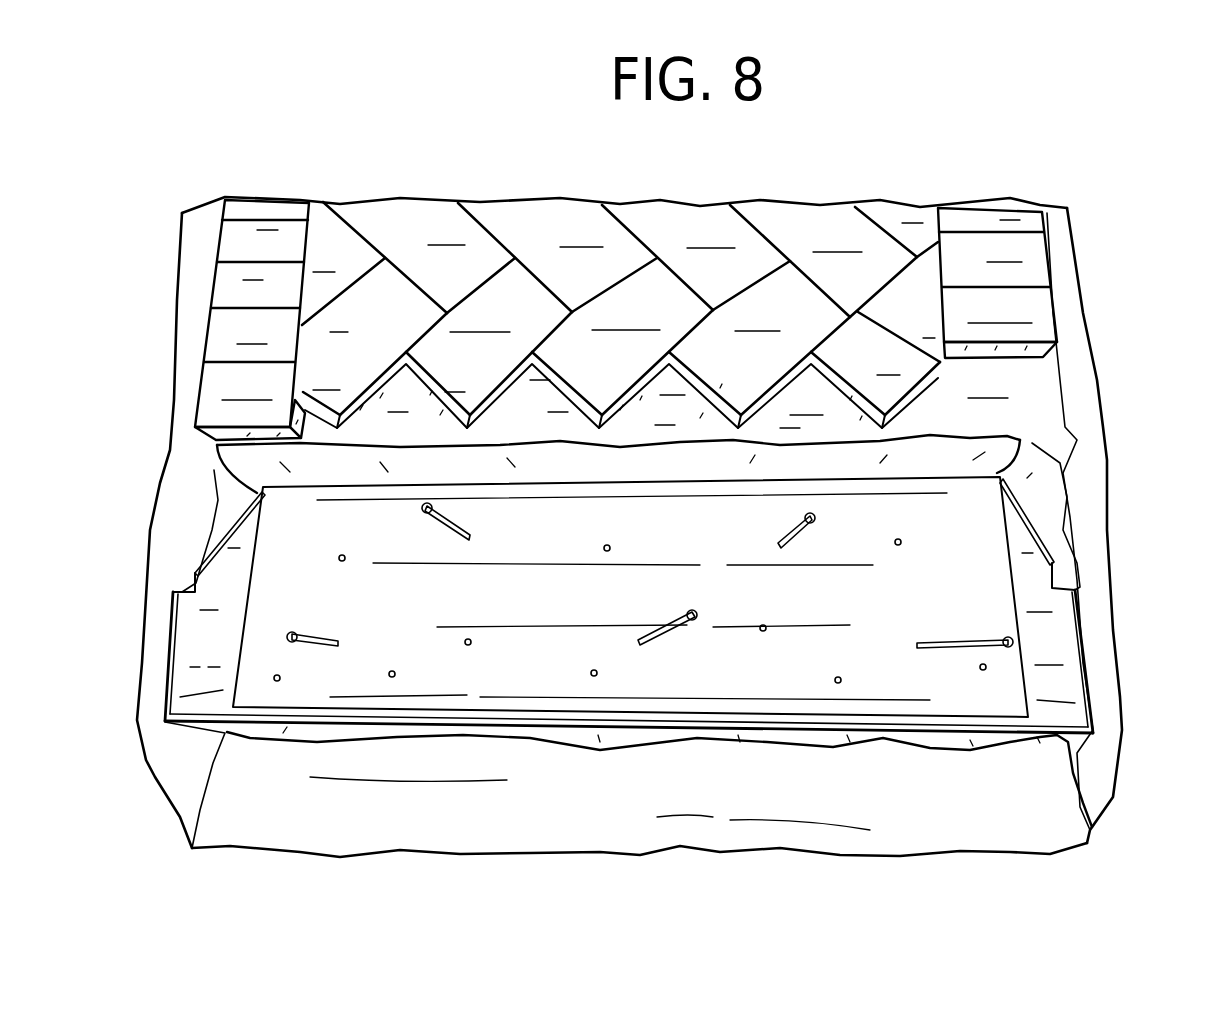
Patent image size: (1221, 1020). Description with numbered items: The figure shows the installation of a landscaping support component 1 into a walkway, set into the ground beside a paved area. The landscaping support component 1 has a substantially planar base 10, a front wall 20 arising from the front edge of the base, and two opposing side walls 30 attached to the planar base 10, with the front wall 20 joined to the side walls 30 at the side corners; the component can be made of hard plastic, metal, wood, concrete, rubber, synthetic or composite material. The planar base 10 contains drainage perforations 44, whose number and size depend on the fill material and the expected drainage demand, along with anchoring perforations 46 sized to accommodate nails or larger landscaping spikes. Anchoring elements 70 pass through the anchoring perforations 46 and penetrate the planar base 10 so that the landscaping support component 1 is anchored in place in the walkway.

The landscaping support component 1 is at (1142, 738).
The substantially planar base 10 is at (957, 523).
The front wall 20 is at (797, 713).
The side walls 30 is at (217, 587).
The drainage perforations 44 is at (340, 556).
The anchoring perforations 46 is at (470, 537).
The anchoring elements 70 is at (427, 512).